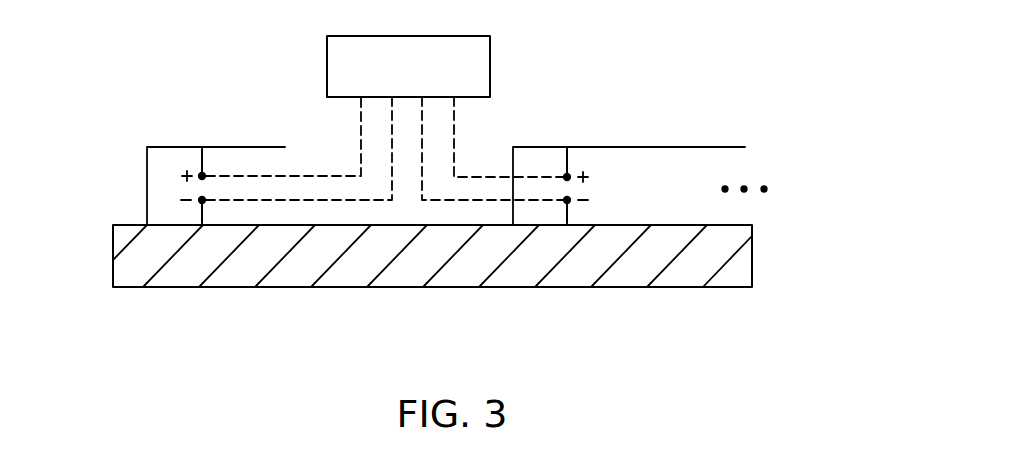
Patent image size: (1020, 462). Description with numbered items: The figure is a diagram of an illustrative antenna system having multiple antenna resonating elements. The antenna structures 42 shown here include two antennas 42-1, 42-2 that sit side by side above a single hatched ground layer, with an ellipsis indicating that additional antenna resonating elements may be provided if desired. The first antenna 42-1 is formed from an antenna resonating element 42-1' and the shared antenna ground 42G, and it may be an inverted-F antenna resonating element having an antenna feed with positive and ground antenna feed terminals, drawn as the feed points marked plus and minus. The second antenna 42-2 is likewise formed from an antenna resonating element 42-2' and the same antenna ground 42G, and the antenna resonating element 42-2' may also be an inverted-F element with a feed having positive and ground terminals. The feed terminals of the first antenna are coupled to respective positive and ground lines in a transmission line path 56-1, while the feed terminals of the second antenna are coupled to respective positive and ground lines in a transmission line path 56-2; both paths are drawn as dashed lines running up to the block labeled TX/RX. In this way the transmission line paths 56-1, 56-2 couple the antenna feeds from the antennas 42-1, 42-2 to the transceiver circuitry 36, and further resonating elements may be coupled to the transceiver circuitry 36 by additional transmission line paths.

The transceiver circuitry 36 is at (490, 65).
The antenna structures 42 is at (798, 130).
The antenna 42-1 is at (216, 158).
The antenna resonating element 42-1' is at (130, 186).
The antenna 42-2 is at (630, 158).
The antenna resonating element 42-2' is at (521, 153).
The antenna ground 42G is at (237, 272).
The transmission line path 56-1 is at (325, 170).
The transmission line path 56-2 is at (418, 203).